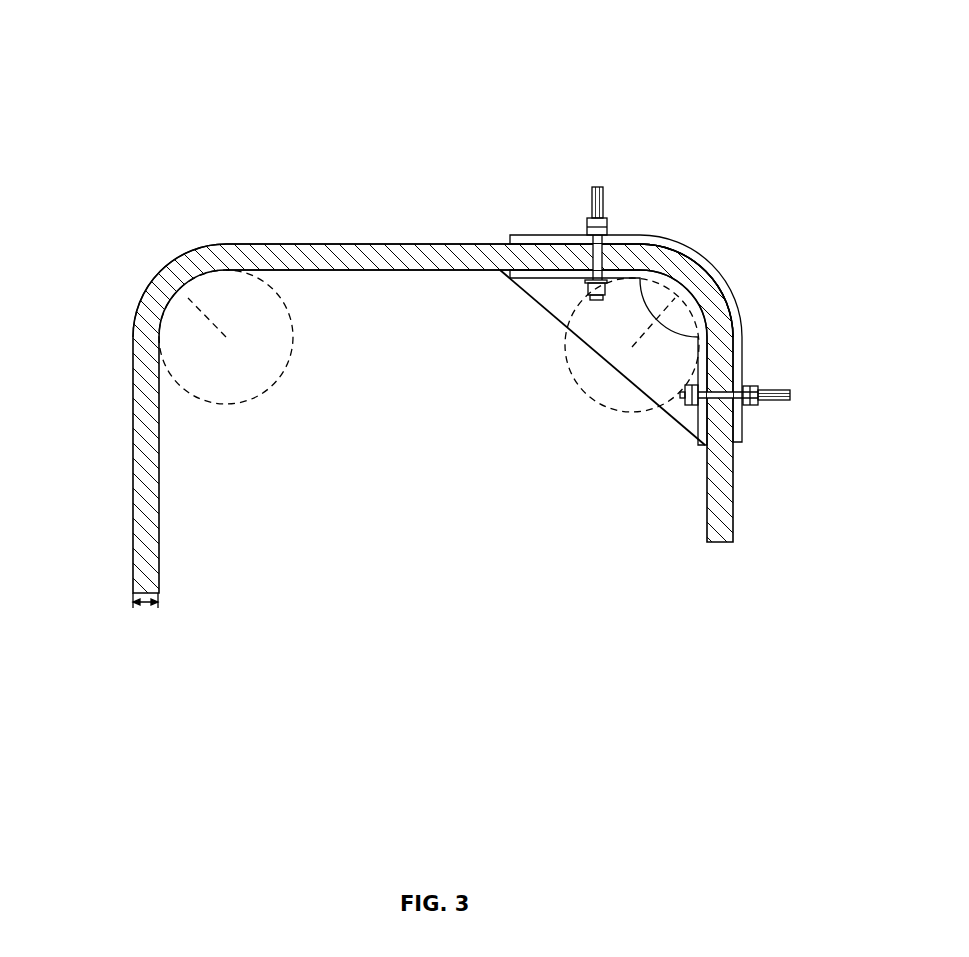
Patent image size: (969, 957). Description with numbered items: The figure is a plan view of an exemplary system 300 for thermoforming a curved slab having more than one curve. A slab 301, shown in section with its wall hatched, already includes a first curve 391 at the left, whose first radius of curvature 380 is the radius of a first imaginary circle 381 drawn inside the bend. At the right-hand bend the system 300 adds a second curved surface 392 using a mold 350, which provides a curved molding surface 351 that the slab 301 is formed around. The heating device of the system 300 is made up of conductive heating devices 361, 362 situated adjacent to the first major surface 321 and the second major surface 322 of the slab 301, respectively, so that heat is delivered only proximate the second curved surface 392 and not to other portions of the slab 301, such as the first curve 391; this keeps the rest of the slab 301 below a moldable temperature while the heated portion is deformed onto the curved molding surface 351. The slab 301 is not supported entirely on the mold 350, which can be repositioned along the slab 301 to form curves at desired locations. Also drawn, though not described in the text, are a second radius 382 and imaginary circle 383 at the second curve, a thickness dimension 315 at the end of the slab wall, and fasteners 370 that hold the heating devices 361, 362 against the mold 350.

The system 300 is at (124, 44).
The slab 301 is at (418, 252).
The wall thickness 315 is at (146, 605).
The first major surface 321 is at (400, 278).
The second major surface 322 is at (360, 238).
The mold 350 is at (688, 305).
The curved molding surface 351 is at (683, 270).
The conductive heating device 361 is at (698, 415).
The conductive heating device 362 is at (650, 241).
The fastener bolt 370 is at (848, 309).
The first radius of curvature 380 is at (214, 328).
The first imaginary circle 381 is at (294, 350).
The second bend radius 382 is at (670, 303).
The second bend radius circle 383 is at (617, 410).
The first curve 391 is at (150, 297).
The second curved surface 392 is at (723, 305).